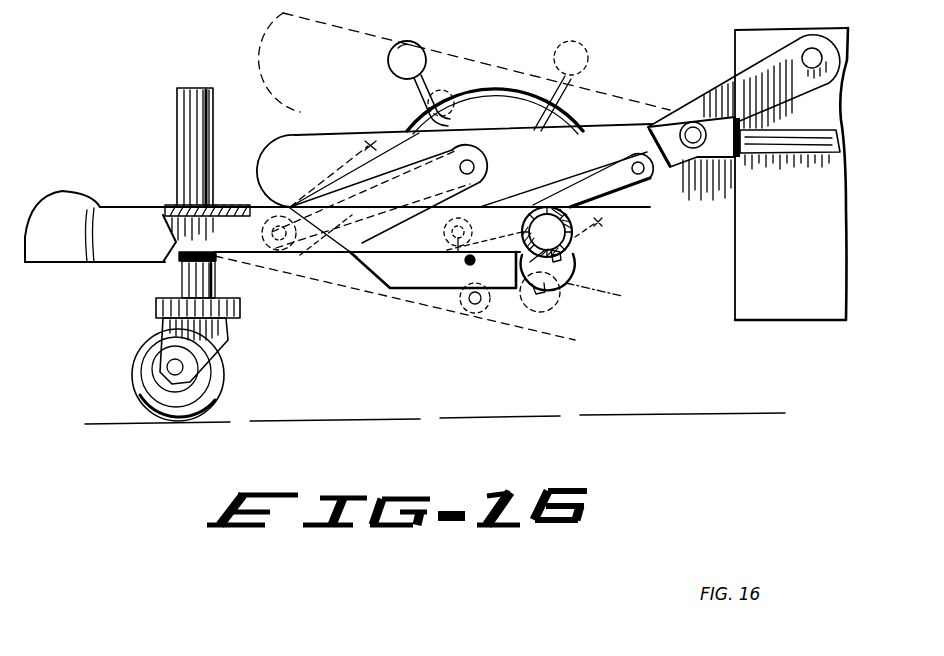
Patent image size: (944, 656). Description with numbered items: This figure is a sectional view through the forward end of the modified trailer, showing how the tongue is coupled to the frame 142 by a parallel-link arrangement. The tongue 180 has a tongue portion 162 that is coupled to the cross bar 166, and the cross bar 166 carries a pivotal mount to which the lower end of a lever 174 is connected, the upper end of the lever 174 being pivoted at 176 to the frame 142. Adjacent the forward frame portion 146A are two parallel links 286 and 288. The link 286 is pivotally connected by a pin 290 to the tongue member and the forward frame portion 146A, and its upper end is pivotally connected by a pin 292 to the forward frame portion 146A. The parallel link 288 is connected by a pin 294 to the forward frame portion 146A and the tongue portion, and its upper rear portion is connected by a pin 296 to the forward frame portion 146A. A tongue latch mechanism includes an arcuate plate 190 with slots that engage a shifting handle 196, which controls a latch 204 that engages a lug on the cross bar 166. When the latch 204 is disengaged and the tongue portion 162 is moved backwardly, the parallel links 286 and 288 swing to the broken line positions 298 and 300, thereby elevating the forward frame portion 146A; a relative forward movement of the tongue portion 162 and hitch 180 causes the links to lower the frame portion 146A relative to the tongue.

The frame 142 is at (780, 311).
The forward frame portion 146A is at (302, 143).
The tongue portion 162 is at (247, 258).
The cross bar 166 is at (571, 228).
The lever 174 is at (718, 82).
The pivot 176 is at (807, 57).
The tongue 180 is at (78, 197).
The arcuate plate 190 is at (503, 90).
The shifting handle 196 is at (413, 88).
The latch 204 is at (568, 278).
The parallel link 286 is at (415, 190).
The parallel link 288 is at (557, 177).
The pin 290 is at (273, 237).
The pin 292 is at (474, 168).
The pin 294 is at (455, 255).
The pin 296 is at (642, 162).
The broken line position 298 is at (464, 130).
The broken line position 300 is at (598, 223).